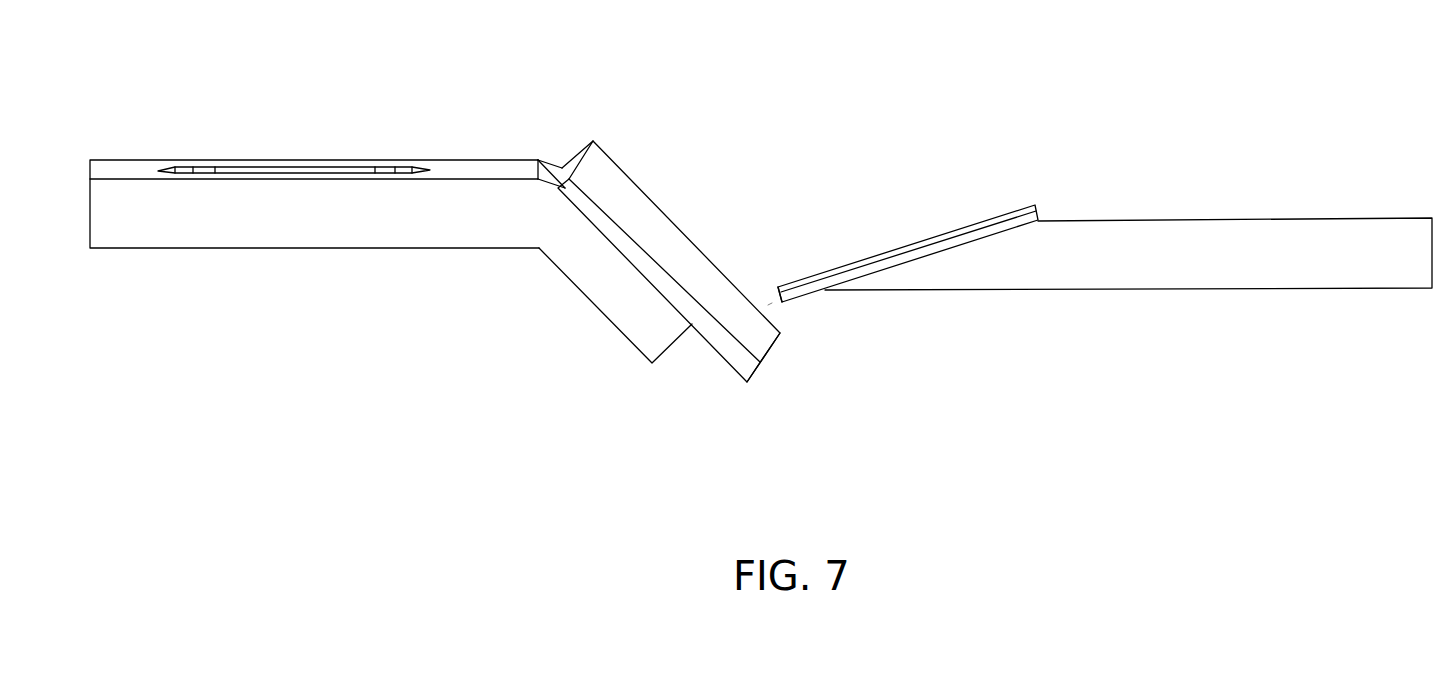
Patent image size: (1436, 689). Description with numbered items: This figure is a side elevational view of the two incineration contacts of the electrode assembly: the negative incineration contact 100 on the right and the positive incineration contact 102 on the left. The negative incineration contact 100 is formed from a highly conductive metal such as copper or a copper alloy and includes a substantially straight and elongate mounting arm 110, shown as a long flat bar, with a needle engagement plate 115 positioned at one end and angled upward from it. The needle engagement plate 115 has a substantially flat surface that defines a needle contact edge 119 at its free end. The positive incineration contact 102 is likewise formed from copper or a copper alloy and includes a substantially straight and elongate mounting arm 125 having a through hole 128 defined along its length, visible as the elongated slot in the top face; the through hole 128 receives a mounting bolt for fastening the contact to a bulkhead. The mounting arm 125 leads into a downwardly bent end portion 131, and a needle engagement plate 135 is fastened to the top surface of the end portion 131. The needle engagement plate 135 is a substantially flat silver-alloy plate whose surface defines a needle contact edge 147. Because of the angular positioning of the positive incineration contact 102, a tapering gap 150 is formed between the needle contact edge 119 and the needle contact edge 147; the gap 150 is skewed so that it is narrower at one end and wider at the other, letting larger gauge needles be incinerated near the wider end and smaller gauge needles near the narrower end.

The negative incineration contact 100 is at (1153, 208).
The positive incineration contact 102 is at (410, 130).
The mounting arm 110 is at (1220, 273).
The needle engagement plate 115 is at (1013, 208).
The needle contact edge 119 is at (774, 300).
The mounting arm 125 is at (135, 235).
The through hole 128 is at (256, 170).
The end portion 131 is at (630, 325).
The needle engagement plate 135 is at (607, 177).
The needle contact edge 147 is at (770, 350).
The gap 150 is at (768, 303).